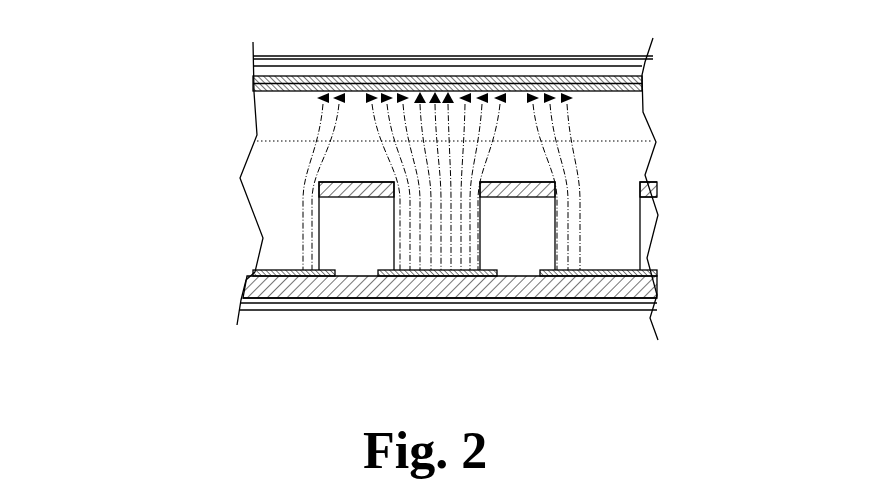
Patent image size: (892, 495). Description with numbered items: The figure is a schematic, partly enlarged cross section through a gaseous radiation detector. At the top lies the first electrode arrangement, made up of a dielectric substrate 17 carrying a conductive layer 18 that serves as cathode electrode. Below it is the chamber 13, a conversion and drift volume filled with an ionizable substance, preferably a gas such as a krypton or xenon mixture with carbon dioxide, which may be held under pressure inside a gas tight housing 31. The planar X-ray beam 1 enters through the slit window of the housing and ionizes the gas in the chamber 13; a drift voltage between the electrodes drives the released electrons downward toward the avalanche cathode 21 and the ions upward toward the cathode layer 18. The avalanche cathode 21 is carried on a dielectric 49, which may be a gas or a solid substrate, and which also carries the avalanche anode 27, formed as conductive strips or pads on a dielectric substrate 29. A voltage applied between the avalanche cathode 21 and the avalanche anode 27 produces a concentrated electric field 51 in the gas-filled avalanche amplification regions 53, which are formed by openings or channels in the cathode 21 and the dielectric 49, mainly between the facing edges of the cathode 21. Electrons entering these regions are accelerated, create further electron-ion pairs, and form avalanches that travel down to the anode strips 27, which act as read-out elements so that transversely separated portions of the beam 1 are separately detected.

The X-ray beam 1 is at (283, 141).
The chamber 13 is at (572, 118).
The dielectric substrate 17 is at (253, 72).
The conductive layer 18 is at (254, 91).
The avalanche cathode 21 is at (319, 186).
The avalanche anode 27 is at (297, 288).
The dielectric substrate 29 is at (246, 292).
The gas tight housing 31 is at (628, 62).
The dielectric 49 is at (343, 257).
The electric field 51 is at (604, 148).
The avalanche amplification regions 53 is at (260, 276).